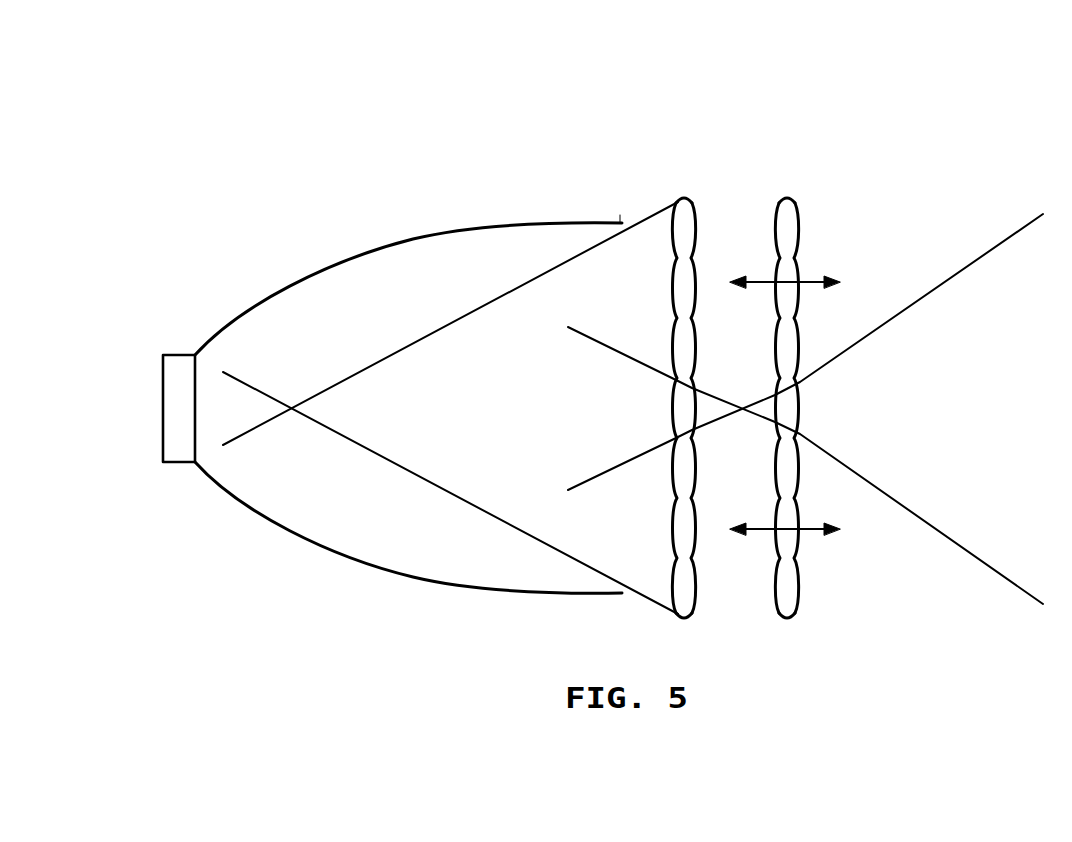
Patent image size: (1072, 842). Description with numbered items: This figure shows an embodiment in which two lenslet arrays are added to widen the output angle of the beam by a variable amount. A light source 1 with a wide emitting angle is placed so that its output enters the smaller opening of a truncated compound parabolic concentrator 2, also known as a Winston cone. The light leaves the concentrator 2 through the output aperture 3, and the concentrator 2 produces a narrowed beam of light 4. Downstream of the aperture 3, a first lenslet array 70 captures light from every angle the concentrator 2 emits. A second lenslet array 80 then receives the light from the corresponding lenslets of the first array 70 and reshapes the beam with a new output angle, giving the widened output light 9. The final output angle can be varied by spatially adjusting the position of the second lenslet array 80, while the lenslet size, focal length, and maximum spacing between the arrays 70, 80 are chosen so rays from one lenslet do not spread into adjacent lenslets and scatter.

The light source 1 is at (181, 347).
The truncated compound parabolic concentrator 2 is at (367, 245).
The output aperture 3 is at (620, 208).
The narrowed beam of light 4 is at (650, 213).
The first lenslet array 70 is at (689, 193).
The second lenslet array 80 is at (790, 193).
The output light rays 9 is at (981, 243).